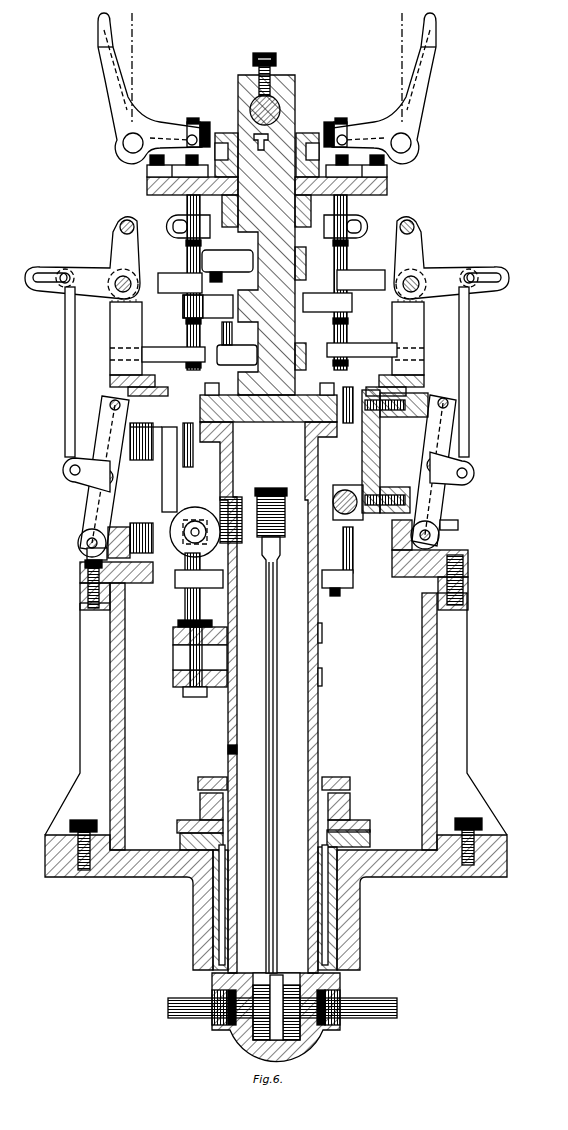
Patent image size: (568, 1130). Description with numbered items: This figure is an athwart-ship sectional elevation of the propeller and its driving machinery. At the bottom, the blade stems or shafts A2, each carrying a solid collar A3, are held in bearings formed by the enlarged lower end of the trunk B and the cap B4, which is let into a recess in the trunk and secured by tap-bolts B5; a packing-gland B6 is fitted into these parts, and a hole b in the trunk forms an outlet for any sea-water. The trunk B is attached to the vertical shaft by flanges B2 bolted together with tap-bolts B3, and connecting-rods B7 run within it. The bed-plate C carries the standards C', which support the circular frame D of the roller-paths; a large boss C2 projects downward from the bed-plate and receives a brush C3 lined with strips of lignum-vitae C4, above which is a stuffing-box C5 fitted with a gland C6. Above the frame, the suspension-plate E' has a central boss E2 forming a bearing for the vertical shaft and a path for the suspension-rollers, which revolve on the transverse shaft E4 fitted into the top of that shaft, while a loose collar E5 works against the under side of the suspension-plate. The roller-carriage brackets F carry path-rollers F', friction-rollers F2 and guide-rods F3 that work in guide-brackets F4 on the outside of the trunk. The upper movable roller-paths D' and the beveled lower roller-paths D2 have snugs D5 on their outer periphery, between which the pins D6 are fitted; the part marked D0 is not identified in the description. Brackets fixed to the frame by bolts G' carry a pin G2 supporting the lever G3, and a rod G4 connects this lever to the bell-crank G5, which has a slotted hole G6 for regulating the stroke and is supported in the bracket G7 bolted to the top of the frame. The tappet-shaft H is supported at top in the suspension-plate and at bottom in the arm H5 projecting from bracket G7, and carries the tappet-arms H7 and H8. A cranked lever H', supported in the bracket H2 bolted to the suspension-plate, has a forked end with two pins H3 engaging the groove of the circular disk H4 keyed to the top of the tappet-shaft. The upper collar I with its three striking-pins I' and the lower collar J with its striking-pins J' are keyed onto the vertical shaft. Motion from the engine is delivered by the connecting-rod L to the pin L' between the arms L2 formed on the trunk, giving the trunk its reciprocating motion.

The suspension-plate E' is at (276, 186).
The central boss E2 is at (267, 149).
The transverse shaft E4 is at (281, 108).
The loose collar E5 is at (275, 211).
The tappet-shaft H is at (267, 282).
The cranked lever H' is at (267, 88).
The bracket H2 is at (266, 164).
The pins H3 is at (193, 117).
The circular disk H4 is at (206, 120).
The arm H5 is at (269, 327).
The tappet-arm H7 is at (271, 281).
The tappet-arm H8 is at (208, 306).
The upper collar I is at (227, 261).
The striking-pins I' is at (216, 284).
The lower collar J is at (264, 355).
The striking-pins J' is at (221, 333).
The bolts G' is at (268, 472).
The pin G2 is at (113, 477).
The lever G3 is at (167, 226).
The rod G4 is at (277, 372).
The bell-crank G5 is at (267, 263).
The slotted hole G6 is at (52, 275).
The bracket G7 is at (267, 349).
The circular frame D is at (274, 504).
The upper movable roller-paths D' is at (245, 543).
The pin D0 is at (440, 532).
The lower movable roller-paths D2 is at (260, 535).
The snugs D5 is at (110, 400).
The pins D6 is at (109, 406).
The trunk B is at (270, 742).
The flanges B2 is at (268, 408).
The tap-bolts B3 is at (269, 387).
The cap B4 is at (318, 537).
The tap-bolts B5 is at (262, 512).
The packing-gland B6 is at (200, 1037).
The connecting-rods B7 is at (279, 755).
The hole b is at (226, 750).
The roller-carriage brackets F is at (243, 469).
The path-rollers F' is at (279, 471).
The friction-rollers F2 is at (195, 532).
The guide-rods F3 is at (193, 455).
The guide-brackets F4 is at (264, 583).
The connecting-rod L is at (192, 662).
The pin L' is at (183, 619).
The arms L2 is at (193, 657).
The bed-plate C is at (276, 894).
The standards C' is at (276, 716).
The boss C2 is at (205, 920).
The brush C3 is at (190, 936).
The strips of lignum-vitae C4 is at (200, 895).
The stuffing-box C5 is at (198, 810).
The gland C6 is at (206, 784).
The stem or shaft A2 is at (397, 1008).
The solid collar A3 is at (232, 1028).